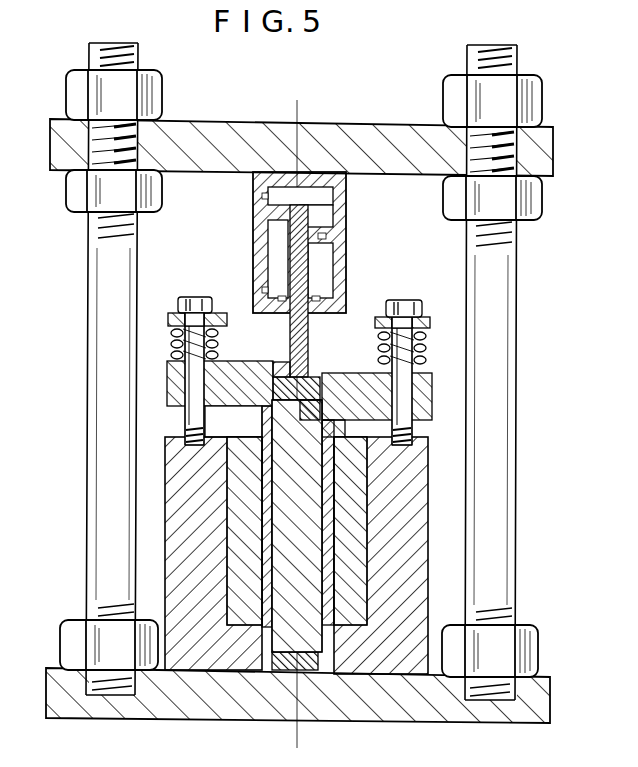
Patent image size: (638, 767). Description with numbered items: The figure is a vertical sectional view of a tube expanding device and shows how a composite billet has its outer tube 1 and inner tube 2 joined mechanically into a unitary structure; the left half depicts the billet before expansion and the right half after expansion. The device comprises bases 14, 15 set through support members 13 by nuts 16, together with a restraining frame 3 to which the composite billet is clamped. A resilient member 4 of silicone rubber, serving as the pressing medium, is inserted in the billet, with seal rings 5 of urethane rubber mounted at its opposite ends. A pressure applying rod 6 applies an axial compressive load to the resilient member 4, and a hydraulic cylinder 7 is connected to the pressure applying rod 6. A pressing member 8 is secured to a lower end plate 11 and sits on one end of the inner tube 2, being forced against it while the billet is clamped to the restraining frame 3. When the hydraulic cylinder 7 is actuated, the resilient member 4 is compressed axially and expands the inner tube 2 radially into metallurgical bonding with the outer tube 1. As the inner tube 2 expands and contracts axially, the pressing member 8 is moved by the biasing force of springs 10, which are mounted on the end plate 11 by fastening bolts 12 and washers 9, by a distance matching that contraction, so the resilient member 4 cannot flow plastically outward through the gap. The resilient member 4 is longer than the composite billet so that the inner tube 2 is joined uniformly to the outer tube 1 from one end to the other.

The first hollow billet 1 is at (360, 485).
The second hollow billet 2 is at (330, 600).
The restraining frame 3 is at (405, 565).
The resilient member 4 is at (318, 525).
The seal rings 5 is at (310, 375).
The pressure applying rod 6 is at (283, 363).
The hydraulic cylinder 7 is at (258, 242).
The pressing member 8 is at (262, 422).
The washers 9 is at (182, 298).
The springs 10 is at (176, 337).
The lower end plate 11 is at (173, 382).
The fastening bolts 12 is at (425, 299).
The support members 13 is at (516, 289).
The base 14 is at (546, 152).
The base 15 is at (545, 707).
The nuts 16 is at (533, 96).